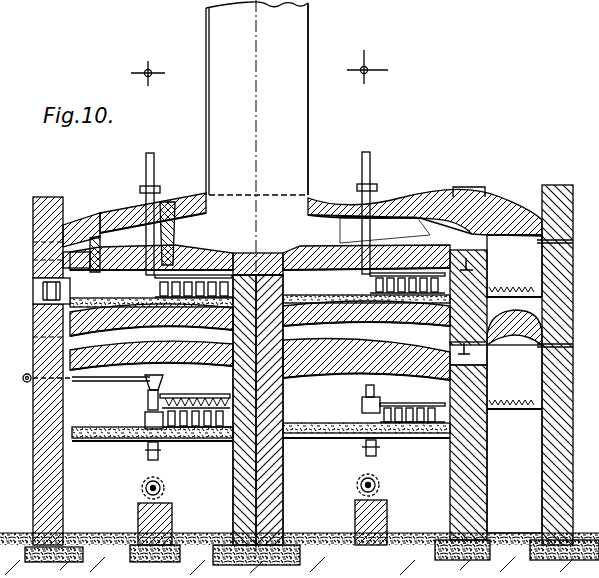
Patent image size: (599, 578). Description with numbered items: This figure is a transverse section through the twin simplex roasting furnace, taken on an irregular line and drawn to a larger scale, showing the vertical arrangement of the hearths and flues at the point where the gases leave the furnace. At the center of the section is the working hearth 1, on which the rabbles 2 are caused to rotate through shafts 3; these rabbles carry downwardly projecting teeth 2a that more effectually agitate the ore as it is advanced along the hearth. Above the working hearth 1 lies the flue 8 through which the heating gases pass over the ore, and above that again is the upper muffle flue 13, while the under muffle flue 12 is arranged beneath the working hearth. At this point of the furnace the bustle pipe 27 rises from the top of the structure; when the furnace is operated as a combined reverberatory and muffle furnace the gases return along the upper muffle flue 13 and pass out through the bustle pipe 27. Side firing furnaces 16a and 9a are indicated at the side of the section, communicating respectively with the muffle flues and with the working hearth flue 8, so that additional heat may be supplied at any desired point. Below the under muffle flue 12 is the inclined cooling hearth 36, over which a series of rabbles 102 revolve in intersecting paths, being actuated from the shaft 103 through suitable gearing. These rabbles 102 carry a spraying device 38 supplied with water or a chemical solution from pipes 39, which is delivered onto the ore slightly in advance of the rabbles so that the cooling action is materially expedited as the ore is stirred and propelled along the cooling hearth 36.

The bustle pipe 27 is at (257, 98).
The shaft 3 is at (259, 71).
The flue 13 is at (321, 215).
The flue 8 is at (260, 290).
The rabble 2 is at (280, 281).
The downwardly projecting teeth 2a is at (158, 290).
The working hearth 1 is at (253, 306).
The flue 12 is at (260, 340).
The side firing furnace 16a is at (514, 266).
The side firing furnace 9a is at (514, 439).
The pipe 39 is at (77, 378).
The spraying device 38 is at (188, 401).
The cooling hearth 36 is at (261, 421).
The rabble 102 is at (145, 414).
The shaft 103 is at (160, 484).